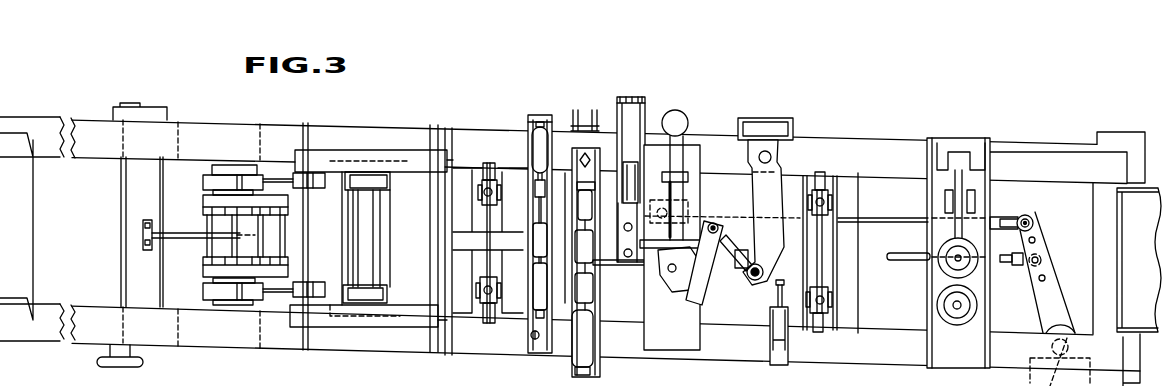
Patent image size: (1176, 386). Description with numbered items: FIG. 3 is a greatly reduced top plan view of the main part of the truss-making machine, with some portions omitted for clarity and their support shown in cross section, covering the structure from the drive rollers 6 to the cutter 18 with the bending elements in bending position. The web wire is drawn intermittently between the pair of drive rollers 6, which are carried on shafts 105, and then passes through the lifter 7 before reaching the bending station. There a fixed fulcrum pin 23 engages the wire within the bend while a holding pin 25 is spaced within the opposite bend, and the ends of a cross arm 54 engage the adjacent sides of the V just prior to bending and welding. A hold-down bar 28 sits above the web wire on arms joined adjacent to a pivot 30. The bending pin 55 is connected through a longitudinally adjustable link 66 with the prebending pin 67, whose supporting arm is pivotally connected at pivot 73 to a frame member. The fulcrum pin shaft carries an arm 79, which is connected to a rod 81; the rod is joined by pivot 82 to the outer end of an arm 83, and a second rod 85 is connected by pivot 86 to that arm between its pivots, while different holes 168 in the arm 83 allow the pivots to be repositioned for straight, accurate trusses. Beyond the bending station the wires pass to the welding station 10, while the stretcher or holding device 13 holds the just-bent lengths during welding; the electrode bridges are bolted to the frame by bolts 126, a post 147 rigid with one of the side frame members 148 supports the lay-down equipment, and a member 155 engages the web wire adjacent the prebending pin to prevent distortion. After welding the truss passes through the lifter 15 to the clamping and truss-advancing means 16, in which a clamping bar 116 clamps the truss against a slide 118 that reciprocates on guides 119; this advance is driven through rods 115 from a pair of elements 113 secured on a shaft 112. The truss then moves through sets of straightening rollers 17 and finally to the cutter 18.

The drive rollers 6 is at (966, 294).
The lifter 7 is at (833, 250).
The welding station 10 is at (528, 214).
The stretcher or holding device 13 is at (573, 272).
The lifter 15 is at (484, 214).
The clamping and truss-advancing means 16 is at (402, 193).
The straightening rollers 17 is at (199, 247).
The cutter 18 is at (28, 198).
The fulcrum pin 23 is at (670, 275).
The holding pin 25 is at (625, 230).
The hold-down bar 28 is at (683, 308).
The pivot 30 is at (689, 115).
The cross arm 54 is at (638, 290).
The bending pin 55 is at (712, 234).
The link 66 is at (737, 265).
The prebending pin 67 is at (758, 284).
The pivot 73 is at (819, 239).
The arm 79 is at (687, 200).
The rod 81 is at (907, 215).
The pivot 82 is at (1043, 212).
The arm 83 is at (1060, 301).
The rod 85 is at (910, 262).
The pivot 86 is at (1040, 260).
The shafts 105 is at (963, 307).
The shaft 112 is at (222, 305).
The elements 113 is at (233, 175).
The rods 115 is at (278, 173).
The clamping bar 116 is at (372, 222).
The slide 118 is at (382, 280).
The guides 119 is at (400, 318).
The bolts 126 is at (589, 156).
The post 147 is at (575, 110).
The side frame members 148 is at (460, 133).
The member 155 is at (784, 290).
The holes 168 is at (1037, 240).